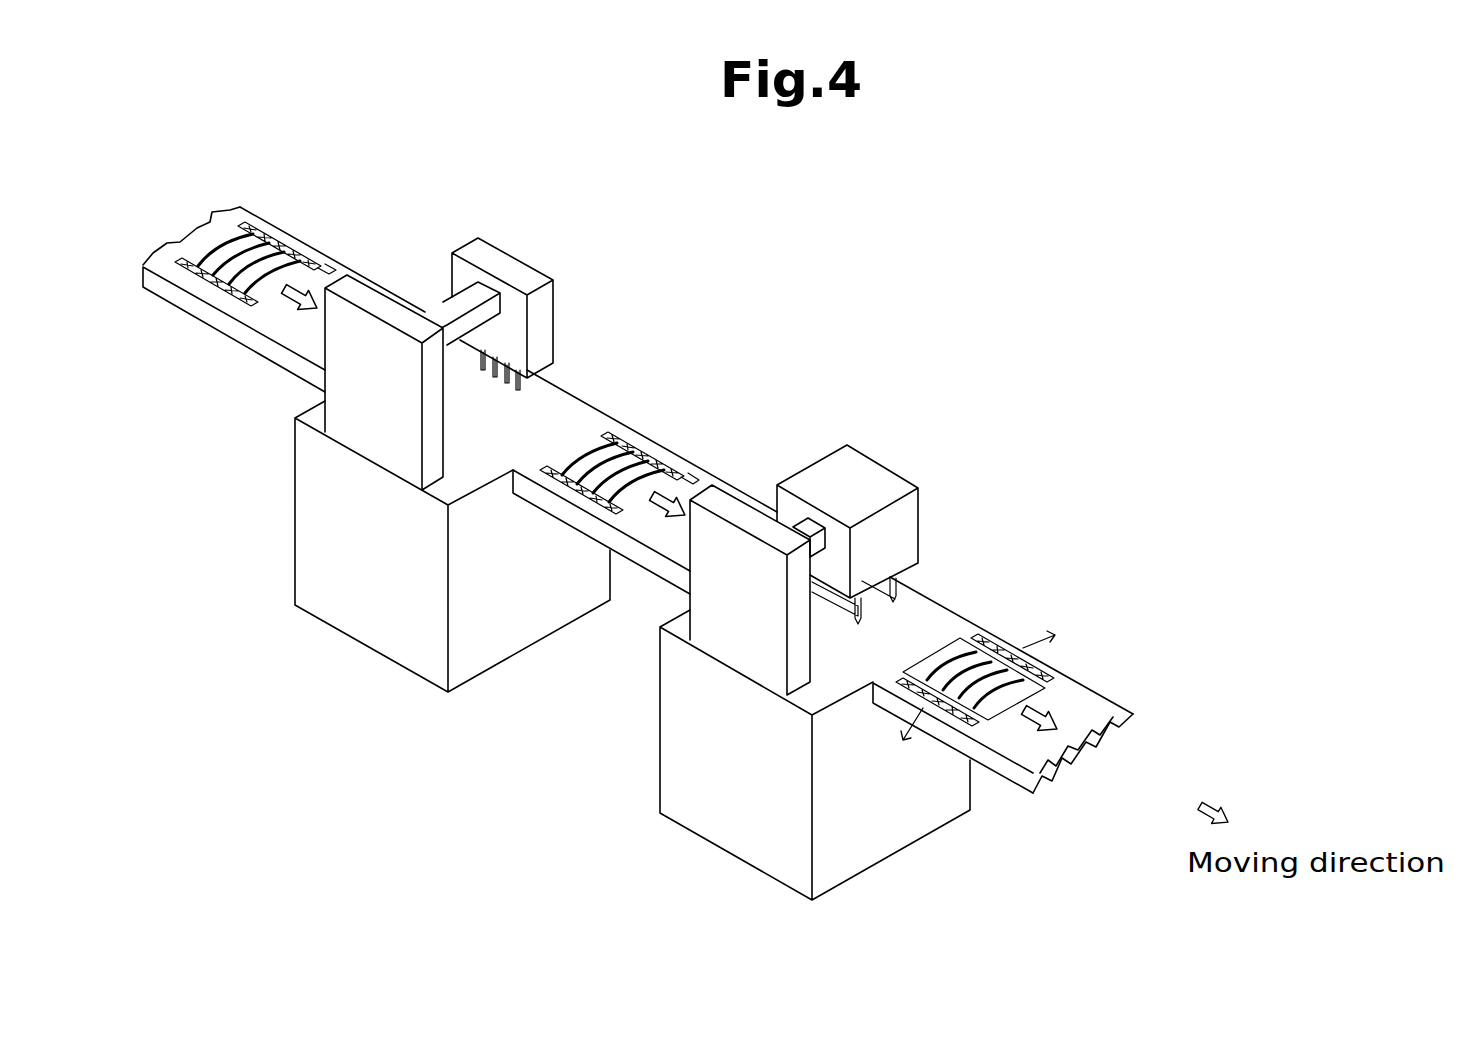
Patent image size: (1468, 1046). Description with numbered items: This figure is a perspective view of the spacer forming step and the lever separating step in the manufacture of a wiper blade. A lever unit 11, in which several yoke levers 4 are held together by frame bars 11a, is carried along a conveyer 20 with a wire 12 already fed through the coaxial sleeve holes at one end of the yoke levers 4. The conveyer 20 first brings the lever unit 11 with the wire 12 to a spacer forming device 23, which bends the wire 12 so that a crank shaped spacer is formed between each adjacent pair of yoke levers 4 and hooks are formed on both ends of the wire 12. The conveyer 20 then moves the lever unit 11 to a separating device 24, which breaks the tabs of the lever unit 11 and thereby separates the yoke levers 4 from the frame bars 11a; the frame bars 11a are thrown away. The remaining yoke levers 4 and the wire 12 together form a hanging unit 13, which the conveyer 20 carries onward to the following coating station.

The yoke levers 4 is at (212, 233).
The lever unit 11 is at (248, 162).
The frame bars 11a is at (272, 232).
The wire 12 is at (327, 269).
The hanging unit 13 is at (950, 562).
The conveyer 20 is at (273, 354).
The spacer forming device 23 is at (352, 627).
The separating device 24 is at (718, 832).